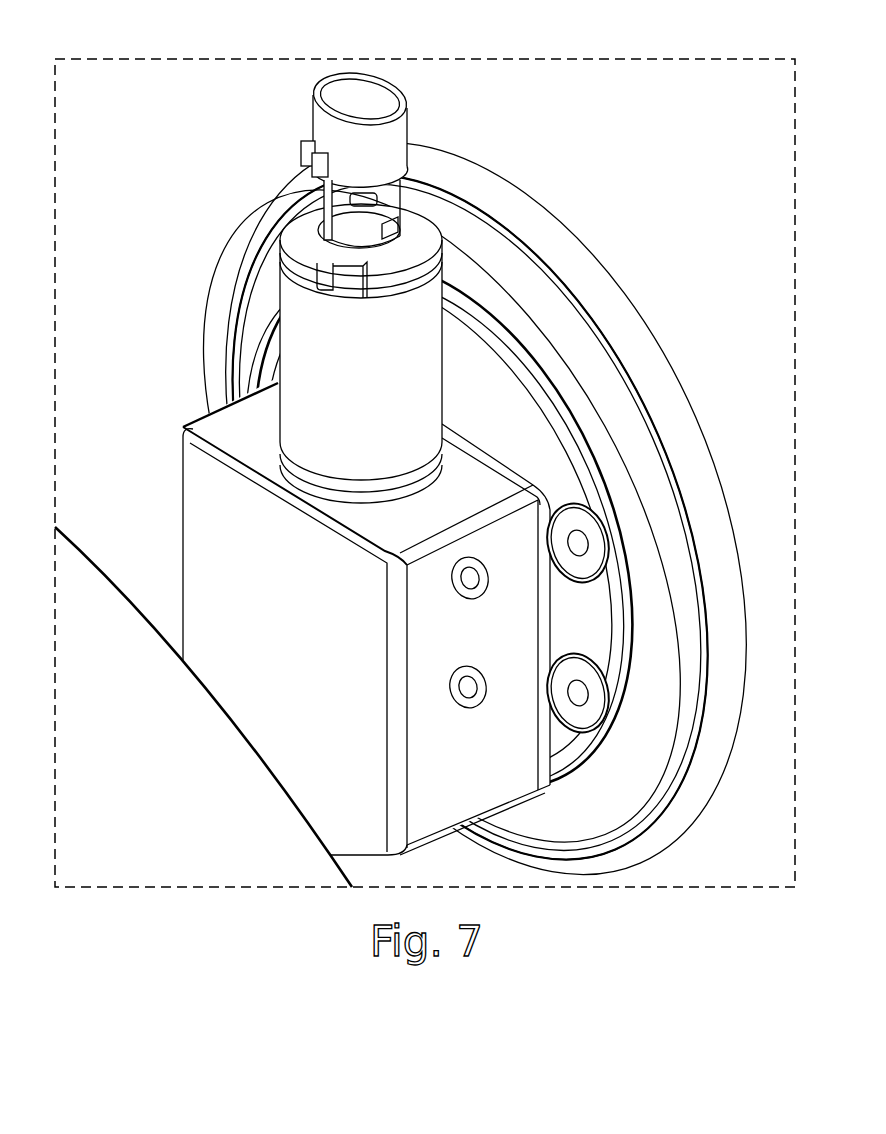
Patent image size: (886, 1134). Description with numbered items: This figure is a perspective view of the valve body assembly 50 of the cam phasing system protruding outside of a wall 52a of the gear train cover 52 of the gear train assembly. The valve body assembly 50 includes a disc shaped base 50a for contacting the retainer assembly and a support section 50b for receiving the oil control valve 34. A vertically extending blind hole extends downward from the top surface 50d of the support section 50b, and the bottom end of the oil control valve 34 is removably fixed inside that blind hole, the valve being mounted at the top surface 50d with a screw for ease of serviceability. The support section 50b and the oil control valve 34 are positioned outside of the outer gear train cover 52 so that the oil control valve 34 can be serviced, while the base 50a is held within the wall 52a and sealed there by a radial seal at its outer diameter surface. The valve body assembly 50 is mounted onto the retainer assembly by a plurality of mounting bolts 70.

The oil control valve 34 is at (400, 80).
The valve body assembly 50 is at (302, 545).
The base 50a is at (528, 436).
The support section 50b is at (202, 503).
The top surface 50d is at (224, 432).
The gear train cover 52 is at (173, 96).
The wall 52a is at (683, 181).
The mounting bolts 70 is at (578, 659).